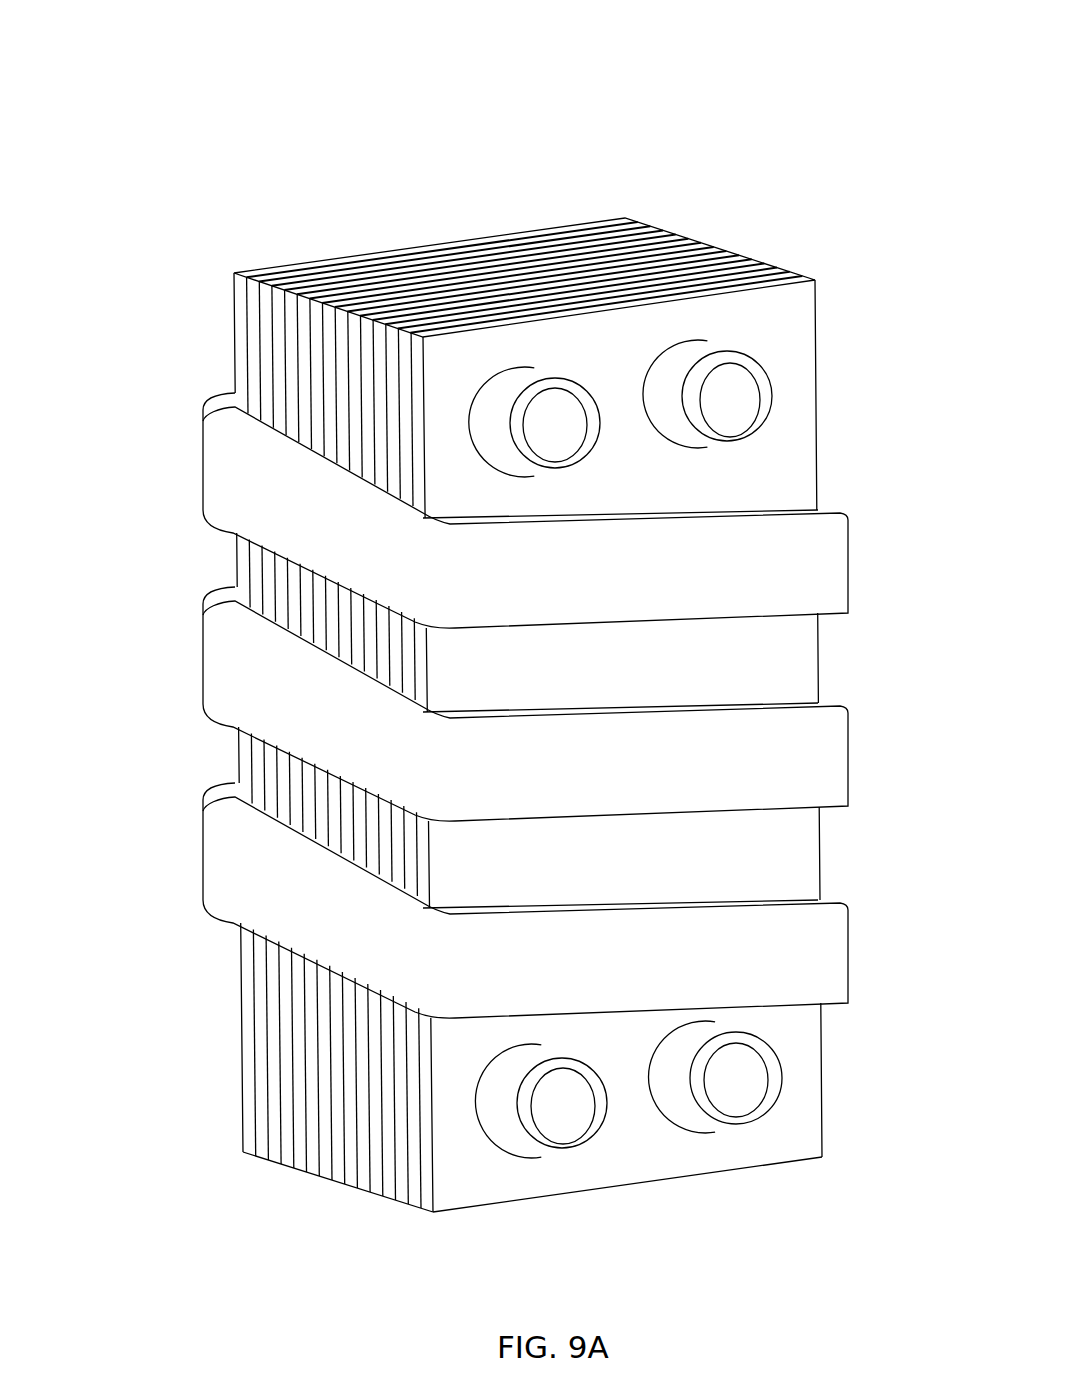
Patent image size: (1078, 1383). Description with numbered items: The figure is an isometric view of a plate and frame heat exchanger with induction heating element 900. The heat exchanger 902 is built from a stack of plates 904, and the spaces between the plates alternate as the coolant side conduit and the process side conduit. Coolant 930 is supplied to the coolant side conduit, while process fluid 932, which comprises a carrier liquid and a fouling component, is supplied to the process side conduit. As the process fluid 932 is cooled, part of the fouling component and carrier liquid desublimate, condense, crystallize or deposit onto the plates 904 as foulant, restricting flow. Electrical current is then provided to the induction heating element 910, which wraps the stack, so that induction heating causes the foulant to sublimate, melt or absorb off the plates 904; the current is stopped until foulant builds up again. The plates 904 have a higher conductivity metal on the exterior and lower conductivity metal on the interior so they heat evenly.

The plate and frame heat exchanger with induction heating element 900 is at (145, 56).
The heat exchanger 902 is at (234, 273).
The plates 904 is at (777, 270).
The induction heating element 910 is at (825, 722).
The coolant 930 is at (723, 398).
The process fluid 932 is at (560, 423).